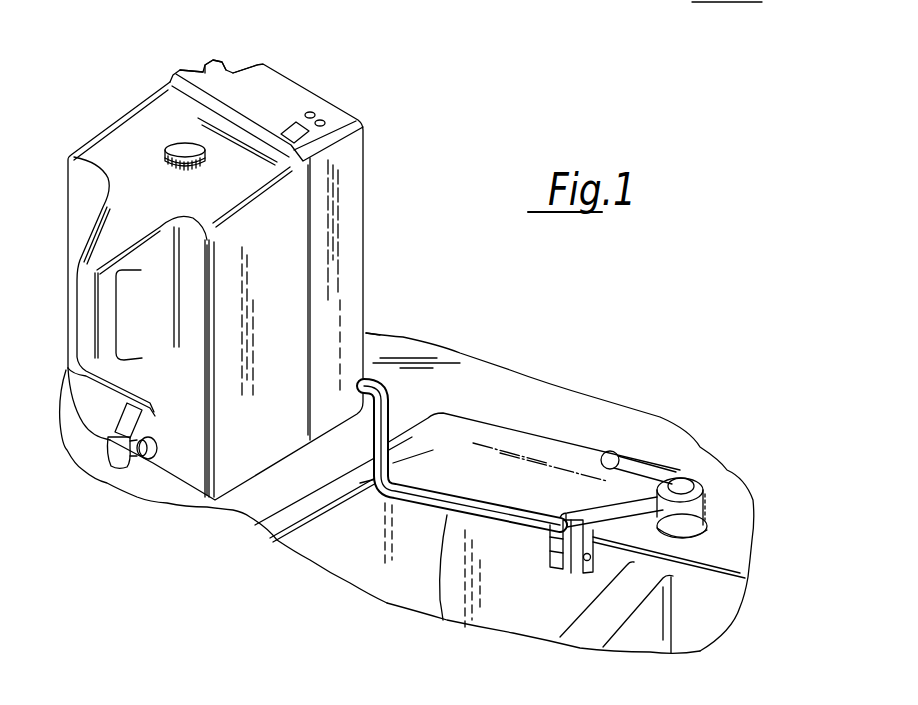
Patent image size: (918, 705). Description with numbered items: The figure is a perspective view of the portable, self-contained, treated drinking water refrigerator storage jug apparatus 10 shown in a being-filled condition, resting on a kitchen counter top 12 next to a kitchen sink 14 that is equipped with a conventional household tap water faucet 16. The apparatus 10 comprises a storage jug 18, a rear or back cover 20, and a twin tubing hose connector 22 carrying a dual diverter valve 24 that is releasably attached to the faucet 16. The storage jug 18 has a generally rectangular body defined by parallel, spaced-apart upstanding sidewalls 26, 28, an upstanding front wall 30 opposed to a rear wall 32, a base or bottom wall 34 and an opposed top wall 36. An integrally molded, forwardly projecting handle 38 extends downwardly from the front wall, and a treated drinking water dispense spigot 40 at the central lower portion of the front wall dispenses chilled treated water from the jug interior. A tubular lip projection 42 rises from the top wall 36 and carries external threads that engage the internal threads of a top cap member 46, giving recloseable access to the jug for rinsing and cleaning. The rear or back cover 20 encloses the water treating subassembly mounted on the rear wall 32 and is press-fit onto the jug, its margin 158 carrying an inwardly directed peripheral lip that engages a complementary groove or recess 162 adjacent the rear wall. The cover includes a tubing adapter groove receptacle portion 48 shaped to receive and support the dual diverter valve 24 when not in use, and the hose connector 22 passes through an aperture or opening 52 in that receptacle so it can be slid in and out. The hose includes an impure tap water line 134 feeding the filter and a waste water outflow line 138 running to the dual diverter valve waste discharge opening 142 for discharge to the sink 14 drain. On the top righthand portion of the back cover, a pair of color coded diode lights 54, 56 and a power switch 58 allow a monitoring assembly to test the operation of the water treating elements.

The portable self-contained treated drinking water refrigerator storage jug apparatu 10 is at (397, 270).
The kitchen counter top 12 is at (438, 399).
The kitchen sink 14 is at (560, 458).
The tap water faucet 16 is at (707, 497).
The storage jug 18 is at (227, 497).
The rear or back cover 20 is at (347, 190).
The twin tubing hose connector 22 is at (447, 617).
The dual diverter valve 24 is at (580, 560).
The sidewall 26 is at (89, 134).
The sidewall 28 is at (287, 291).
The front wall 30 is at (160, 390).
The rear wall 32 is at (316, 343).
The base or bottom wall 34 is at (273, 503).
The top wall 36 is at (243, 185).
The handle 38 is at (100, 270).
The treated drinking water dispense spigot 40 is at (120, 458).
The tubular lip projection 42 is at (161, 157).
The top cap member 46 is at (185, 146).
The tubing adapter groove receptacle portion 48 is at (200, 78).
The aperture or opening 52 is at (211, 72).
The color coded diode light 54 is at (313, 112).
The color coded diode light 56 is at (323, 119).
The power switch 58 is at (364, 126).
The impure tap water line 134 is at (497, 513).
The waste water outflow line 138 is at (493, 523).
The dual diverter valve waste discharge opening 142 is at (548, 600).
The margin 158 is at (313, 267).
The groove or recess 162 is at (313, 404).